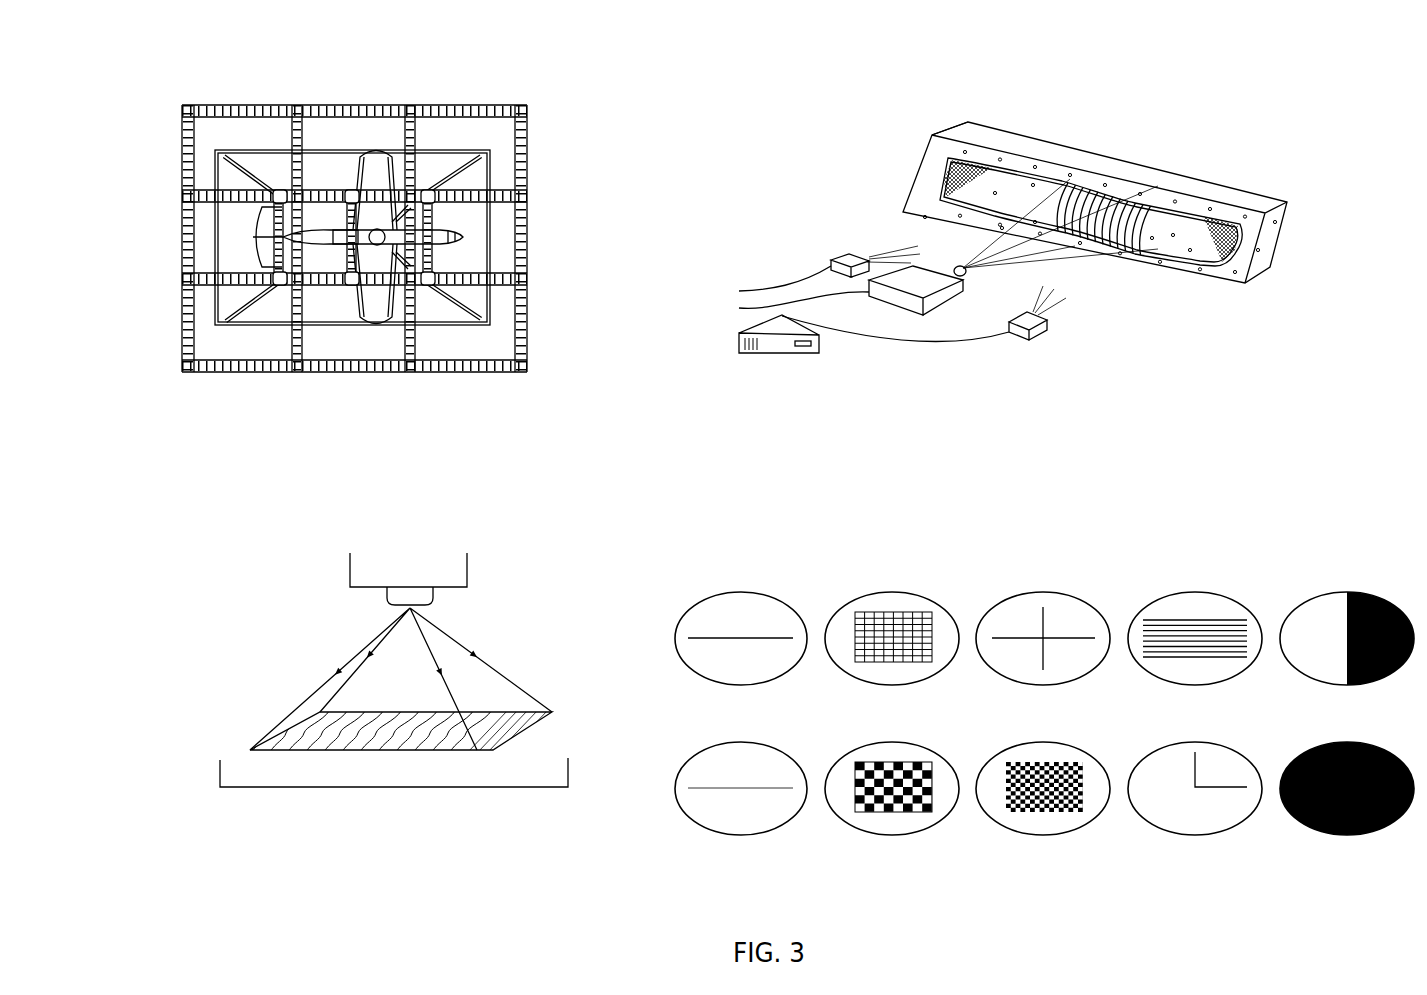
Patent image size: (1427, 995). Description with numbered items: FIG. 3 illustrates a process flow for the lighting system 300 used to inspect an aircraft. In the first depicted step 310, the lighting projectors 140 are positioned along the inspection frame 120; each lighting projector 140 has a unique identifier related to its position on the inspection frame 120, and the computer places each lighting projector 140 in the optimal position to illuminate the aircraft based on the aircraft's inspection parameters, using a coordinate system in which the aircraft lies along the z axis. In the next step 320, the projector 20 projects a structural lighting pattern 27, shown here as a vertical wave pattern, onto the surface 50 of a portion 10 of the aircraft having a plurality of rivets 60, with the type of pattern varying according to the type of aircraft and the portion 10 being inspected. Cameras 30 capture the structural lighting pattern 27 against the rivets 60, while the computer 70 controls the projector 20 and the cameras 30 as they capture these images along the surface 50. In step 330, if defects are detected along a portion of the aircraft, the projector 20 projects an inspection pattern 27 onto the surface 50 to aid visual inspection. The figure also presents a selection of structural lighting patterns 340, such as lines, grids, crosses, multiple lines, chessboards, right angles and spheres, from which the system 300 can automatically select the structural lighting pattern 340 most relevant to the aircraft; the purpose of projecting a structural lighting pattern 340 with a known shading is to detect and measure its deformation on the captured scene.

The portion of the aircraft 10 is at (854, 124).
The projector 20 is at (939, 303).
The structural lighting pattern 27 is at (1068, 170).
The cameras 30 is at (843, 266).
The surface of the aircraft 50 is at (1174, 240).
The rivets 60 is at (946, 198).
The computer 70 is at (812, 353).
The inspection frame 120 is at (210, 95).
The lighting projectors 140 is at (280, 196).
The system 300 is at (1312, 68).
The step of positioning lighting projectors 310 is at (356, 270).
The step of projecting structural lighting pattern 320 is at (1032, 285).
The step of projecting defect patterns 330 is at (380, 868).
The structural lighting patterns 340 is at (1160, 896).